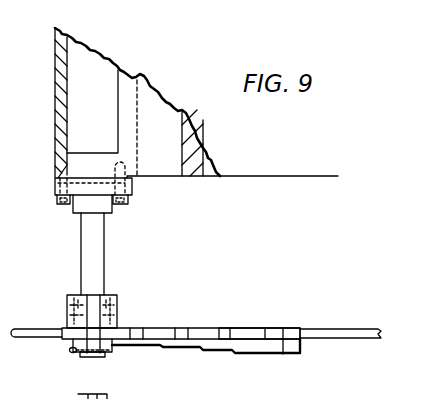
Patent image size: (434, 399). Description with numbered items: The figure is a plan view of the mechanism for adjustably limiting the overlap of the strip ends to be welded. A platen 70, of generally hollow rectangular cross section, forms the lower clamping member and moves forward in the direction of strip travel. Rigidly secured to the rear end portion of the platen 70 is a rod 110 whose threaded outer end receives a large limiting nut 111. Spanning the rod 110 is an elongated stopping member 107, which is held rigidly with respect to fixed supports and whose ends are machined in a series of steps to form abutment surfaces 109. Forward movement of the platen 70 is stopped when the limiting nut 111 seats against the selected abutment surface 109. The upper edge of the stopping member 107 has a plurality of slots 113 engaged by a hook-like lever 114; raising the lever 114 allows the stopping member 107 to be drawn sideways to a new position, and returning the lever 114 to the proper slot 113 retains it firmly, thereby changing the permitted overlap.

The platen 70 is at (62, 131).
The rod 110 is at (104, 259).
The stopping member 107 is at (35, 330).
The abutment surface 109 is at (147, 345).
The limiting nut 111 is at (77, 352).
The slot 113 is at (226, 330).
The hook-like lever 114 is at (97, 384).